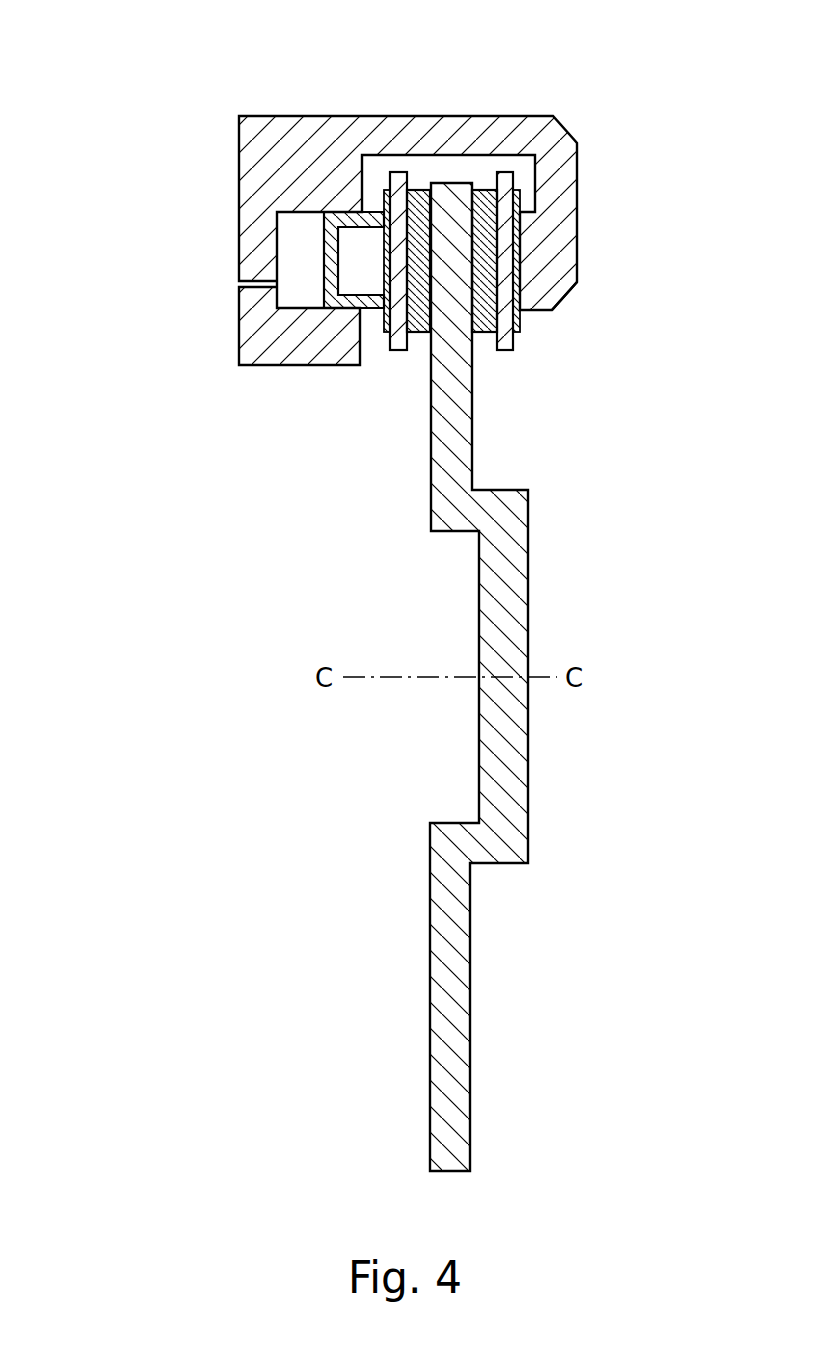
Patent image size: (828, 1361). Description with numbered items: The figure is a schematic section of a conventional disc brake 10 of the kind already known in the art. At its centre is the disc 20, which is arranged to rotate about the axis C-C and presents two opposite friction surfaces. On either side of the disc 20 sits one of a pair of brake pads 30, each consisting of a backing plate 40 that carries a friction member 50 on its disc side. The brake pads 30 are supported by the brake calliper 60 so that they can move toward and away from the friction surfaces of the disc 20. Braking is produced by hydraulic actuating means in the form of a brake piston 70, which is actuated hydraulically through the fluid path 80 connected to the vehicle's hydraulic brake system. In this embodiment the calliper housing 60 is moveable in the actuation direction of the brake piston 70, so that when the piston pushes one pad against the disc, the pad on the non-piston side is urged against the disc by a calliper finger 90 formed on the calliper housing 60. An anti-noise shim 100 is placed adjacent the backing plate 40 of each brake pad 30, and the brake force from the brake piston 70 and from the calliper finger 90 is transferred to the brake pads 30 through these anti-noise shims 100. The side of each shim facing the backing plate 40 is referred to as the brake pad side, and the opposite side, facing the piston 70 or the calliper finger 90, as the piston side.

The disc brake 10 is at (143, 78).
The disc 20 is at (452, 956).
The brake pads 30 is at (396, 365).
The backing plate 40 is at (402, 180).
The friction member 50 is at (418, 186).
The brake calliper 60 is at (500, 133).
The brake piston 70 is at (345, 216).
The fluid path 80 is at (237, 282).
The calliper finger 90 is at (548, 268).
The anti-noise shim 100 is at (384, 205).